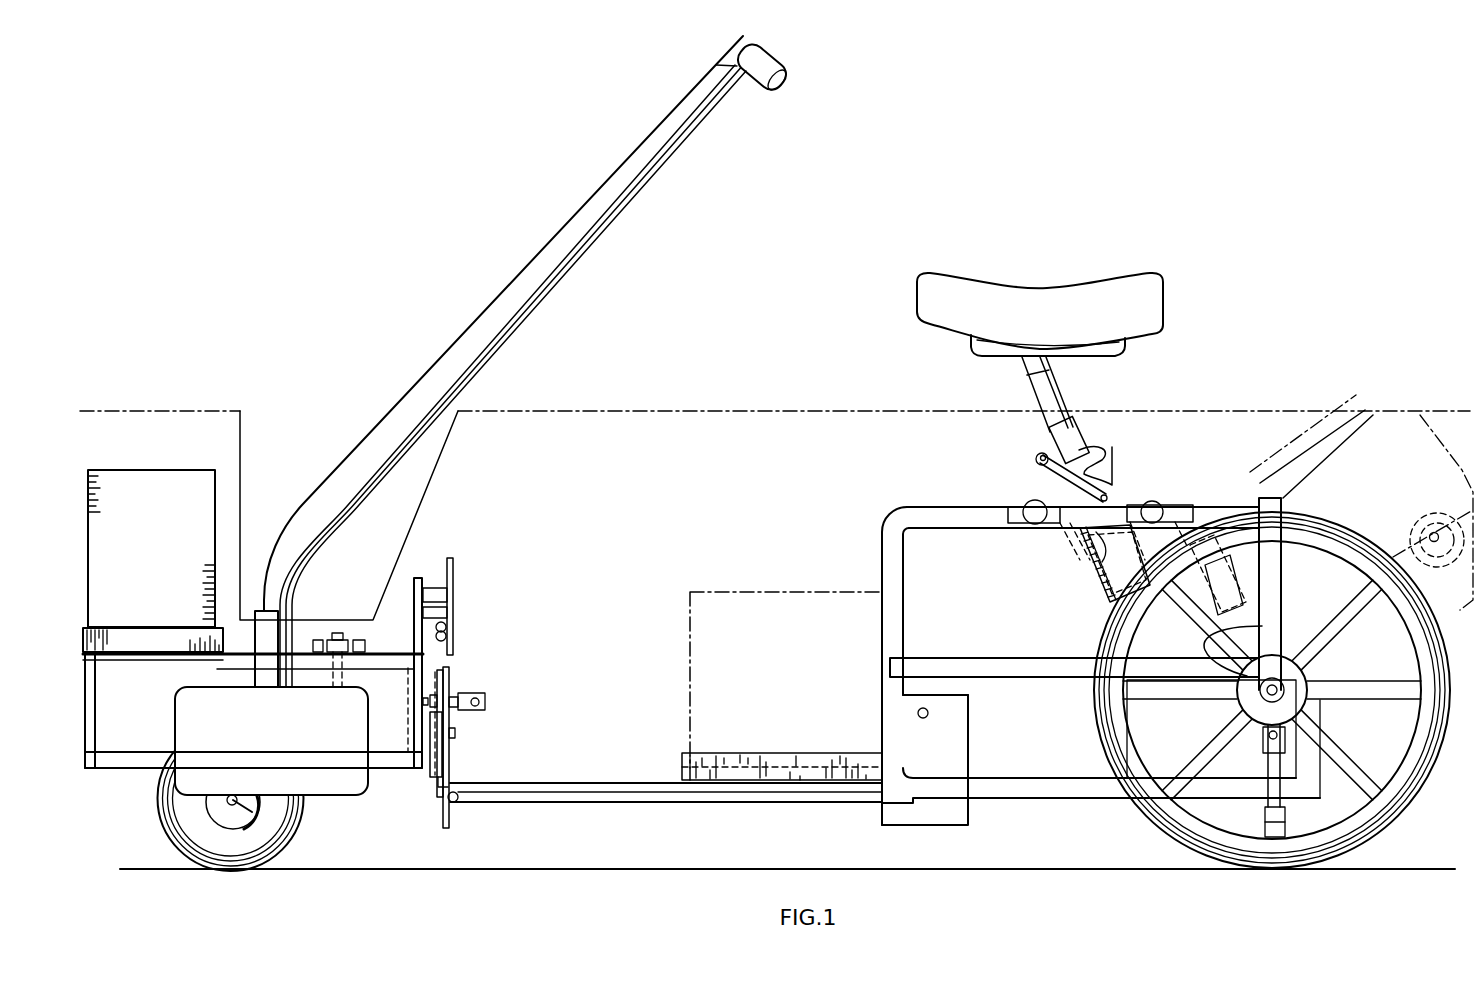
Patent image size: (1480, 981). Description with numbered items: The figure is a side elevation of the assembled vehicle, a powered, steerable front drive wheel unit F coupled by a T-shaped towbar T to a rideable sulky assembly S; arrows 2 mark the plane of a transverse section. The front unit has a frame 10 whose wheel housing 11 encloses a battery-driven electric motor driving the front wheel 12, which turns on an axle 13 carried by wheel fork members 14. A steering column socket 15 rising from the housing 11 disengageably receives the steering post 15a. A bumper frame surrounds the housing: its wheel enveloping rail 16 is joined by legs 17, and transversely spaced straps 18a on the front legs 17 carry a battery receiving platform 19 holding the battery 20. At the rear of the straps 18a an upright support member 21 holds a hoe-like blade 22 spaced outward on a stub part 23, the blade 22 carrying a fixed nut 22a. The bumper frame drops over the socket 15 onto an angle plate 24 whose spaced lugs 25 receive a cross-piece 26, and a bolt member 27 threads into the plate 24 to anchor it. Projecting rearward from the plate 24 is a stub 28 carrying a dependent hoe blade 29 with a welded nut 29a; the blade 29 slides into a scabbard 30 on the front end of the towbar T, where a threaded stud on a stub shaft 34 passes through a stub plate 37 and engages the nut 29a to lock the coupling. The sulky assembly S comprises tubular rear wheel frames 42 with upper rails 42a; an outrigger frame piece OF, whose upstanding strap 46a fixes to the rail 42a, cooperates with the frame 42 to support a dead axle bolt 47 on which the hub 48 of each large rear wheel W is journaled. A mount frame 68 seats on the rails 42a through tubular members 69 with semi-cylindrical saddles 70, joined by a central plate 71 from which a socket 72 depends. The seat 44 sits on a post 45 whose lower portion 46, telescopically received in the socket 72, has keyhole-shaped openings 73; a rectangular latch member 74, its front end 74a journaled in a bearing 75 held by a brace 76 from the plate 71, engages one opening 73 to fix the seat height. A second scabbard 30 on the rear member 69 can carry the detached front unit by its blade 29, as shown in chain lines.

The section line 2- 2 is at (90, 440).
The frame 10 is at (366, 686).
The wheel housing 11 is at (220, 719).
The front wheel 12 is at (181, 838).
The axle 13 is at (238, 802).
The wheel fork members 14 is at (258, 824).
The steering column socket 15 is at (262, 632).
The steering post 15a is at (297, 532).
The wheel enveloping rail 16 is at (118, 758).
The legs 17 is at (96, 699).
The straps 18a is at (153, 652).
The battery receiving platform 19 is at (117, 634).
The electric power supply battery 20 is at (128, 507).
The support member 21 is at (424, 621).
The hoe-like blade 22 is at (455, 573).
The nut 22a is at (448, 628).
The stub part 23 is at (432, 592).
The angle plate 24 is at (307, 670).
The lugs 25 is at (359, 640).
The cross-piece 26 is at (324, 656).
The bolt member 27 is at (338, 633).
The stub 28 is at (424, 750).
The hoe blade 29 is at (441, 683).
The nut 29a is at (430, 705).
The scabbard 30 is at (452, 803).
The stub shaft 34 is at (483, 710).
The stub plate 37 is at (451, 735).
The rear wheel frames 42 is at (923, 507).
The upper rail portion 42a is at (969, 522).
The seat 44 is at (1104, 290).
The post 45 is at (1057, 394).
The lower portion 46 is at (1086, 431).
The upstanding strap 46a is at (1203, 658).
The dead axle bolt 47 is at (1283, 688).
The hub 48 is at (1302, 709).
The mount frame 68 is at (1128, 502).
The tubular members 69 is at (1147, 510).
The saddles 70 is at (1013, 506).
The central plate 71 is at (1133, 534).
The socket 72 is at (1113, 574).
The keyhole-shaped openings 73 is at (1099, 463).
The latch member 74 is at (1092, 529).
The front end 74a is at (1039, 464).
The bearing 75 is at (1037, 452).
The brace 76 is at (1046, 480).
The front unit F is at (301, 628).
The sulky assembly S is at (884, 511).
The towbar T is at (632, 781).
The outrigger frame piece OF is at (957, 671).
The rear wheels W is at (1427, 790).